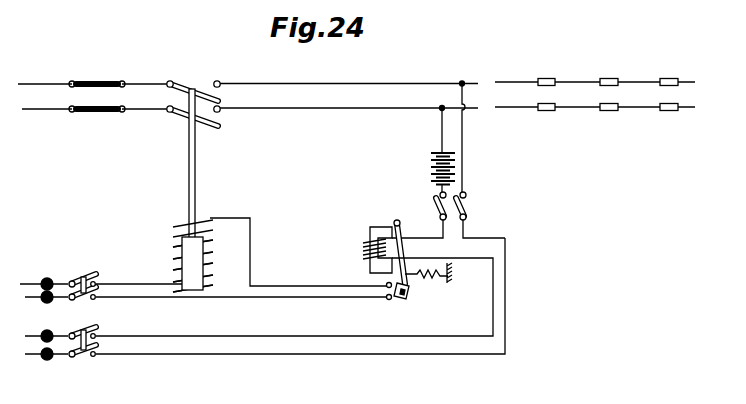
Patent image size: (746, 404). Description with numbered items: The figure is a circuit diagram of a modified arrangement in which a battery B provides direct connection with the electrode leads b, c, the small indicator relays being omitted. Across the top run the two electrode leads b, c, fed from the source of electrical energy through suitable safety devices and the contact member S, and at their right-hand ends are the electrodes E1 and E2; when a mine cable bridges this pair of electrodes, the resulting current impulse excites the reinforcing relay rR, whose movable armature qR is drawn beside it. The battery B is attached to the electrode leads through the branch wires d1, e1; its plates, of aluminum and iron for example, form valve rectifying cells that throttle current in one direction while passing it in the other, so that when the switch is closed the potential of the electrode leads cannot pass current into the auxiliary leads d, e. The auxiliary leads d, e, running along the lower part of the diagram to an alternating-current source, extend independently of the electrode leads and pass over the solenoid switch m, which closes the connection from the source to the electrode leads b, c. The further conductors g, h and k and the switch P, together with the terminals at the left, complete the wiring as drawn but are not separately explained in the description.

The electrode lead b is at (248, 76).
The electrode lead c is at (250, 115).
The contact member S is at (193, 152).
The electrode E1 is at (595, 71).
The electrode E2 is at (595, 122).
The wire d1 is at (474, 139).
The wire e1 is at (431, 152).
The battery B is at (428, 169).
The reinforcing relay rR is at (366, 250).
The movable armature qR is at (407, 259).
The solenoid switch m is at (180, 256).
The wire g is at (203, 254).
The wire h is at (38, 301).
The wire k is at (244, 302).
The switch P is at (82, 277).
The auxiliary lead d is at (259, 297).
The auxiliary lead e is at (265, 304).